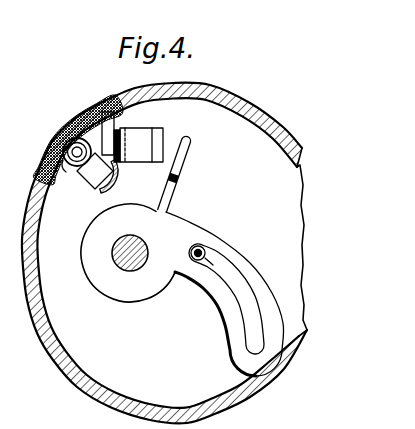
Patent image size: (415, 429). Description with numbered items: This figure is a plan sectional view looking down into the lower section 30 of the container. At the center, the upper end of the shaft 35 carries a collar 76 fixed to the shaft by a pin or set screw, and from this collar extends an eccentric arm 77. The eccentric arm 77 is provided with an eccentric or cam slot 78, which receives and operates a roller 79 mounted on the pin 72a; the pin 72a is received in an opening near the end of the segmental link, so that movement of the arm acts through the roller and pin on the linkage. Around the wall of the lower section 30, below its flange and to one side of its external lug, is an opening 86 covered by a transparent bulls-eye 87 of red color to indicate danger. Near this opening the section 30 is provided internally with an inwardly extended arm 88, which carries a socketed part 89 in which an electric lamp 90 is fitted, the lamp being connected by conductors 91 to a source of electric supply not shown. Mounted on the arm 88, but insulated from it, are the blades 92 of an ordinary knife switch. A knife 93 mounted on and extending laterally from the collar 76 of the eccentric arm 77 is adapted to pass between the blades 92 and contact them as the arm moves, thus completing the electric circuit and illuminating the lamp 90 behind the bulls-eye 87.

The lower section of the container 30 is at (46, 357).
The transparent bulls-eye 87 is at (40, 134).
The electric lamp 90 is at (84, 139).
The opening 86 is at (67, 164).
The socketed part 89 is at (95, 188).
The conductors 91 is at (110, 182).
The inwardly extended arm 88 is at (116, 116).
The blades of knife switch 92 is at (163, 136).
The knife 93 is at (186, 157).
The collar 76 is at (85, 234).
The shaft 35 is at (124, 268).
The pin 72a is at (199, 246).
The roller 79 is at (210, 256).
The eccentric arm 77 is at (247, 262).
The eccentric or cam slot 78 is at (221, 306).